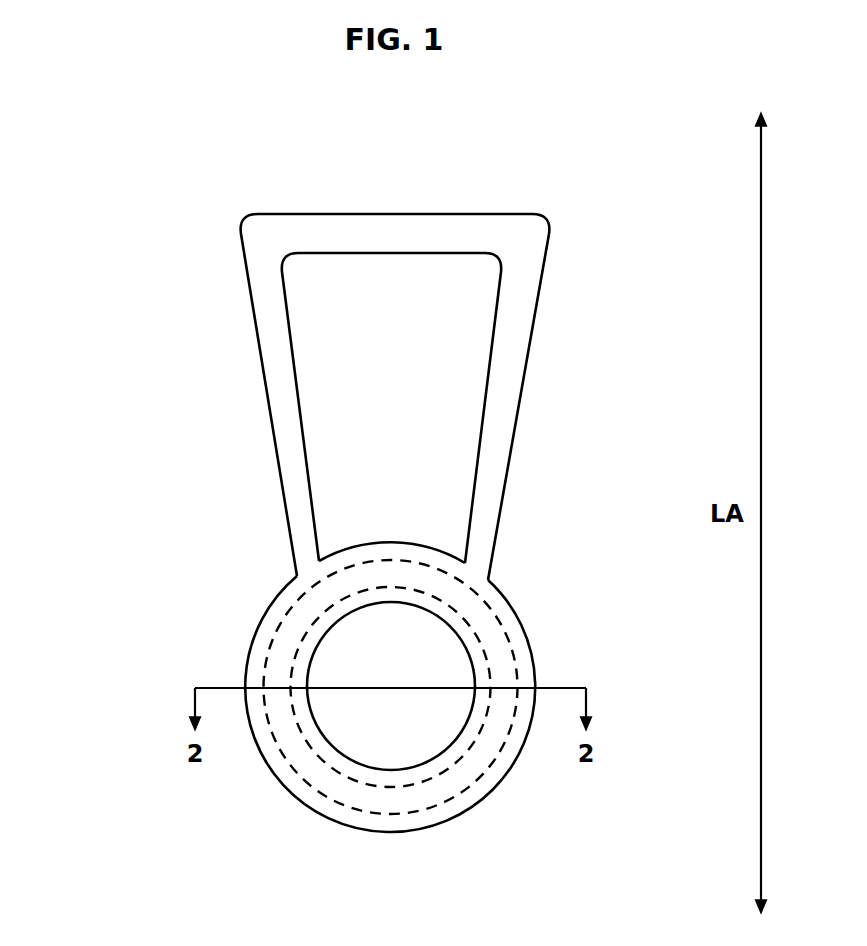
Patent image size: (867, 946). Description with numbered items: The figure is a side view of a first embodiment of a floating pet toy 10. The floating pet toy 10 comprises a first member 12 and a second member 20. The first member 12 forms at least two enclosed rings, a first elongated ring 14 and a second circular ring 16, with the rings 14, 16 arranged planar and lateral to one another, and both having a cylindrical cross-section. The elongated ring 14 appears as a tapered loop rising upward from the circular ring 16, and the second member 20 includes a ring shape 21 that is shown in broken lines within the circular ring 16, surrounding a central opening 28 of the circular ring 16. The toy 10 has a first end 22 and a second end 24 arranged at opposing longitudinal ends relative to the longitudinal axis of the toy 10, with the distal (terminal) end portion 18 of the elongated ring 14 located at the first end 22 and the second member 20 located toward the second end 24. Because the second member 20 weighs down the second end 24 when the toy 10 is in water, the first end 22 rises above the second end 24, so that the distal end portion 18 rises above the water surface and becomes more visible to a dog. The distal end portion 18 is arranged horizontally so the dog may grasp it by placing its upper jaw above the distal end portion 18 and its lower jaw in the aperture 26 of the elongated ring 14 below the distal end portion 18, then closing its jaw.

The floating pet toy 10 is at (138, 182).
The first member 12 is at (514, 186).
The first elongated ring 14 is at (268, 413).
The second circular ring 16 is at (277, 630).
The distal end portion 18 is at (333, 230).
The second member 20 is at (524, 586).
The ring shape 21 is at (523, 664).
The first end 22 is at (296, 190).
The second end 24 is at (358, 851).
The aperture 26 is at (391, 408).
The central aperture 28 is at (391, 686).